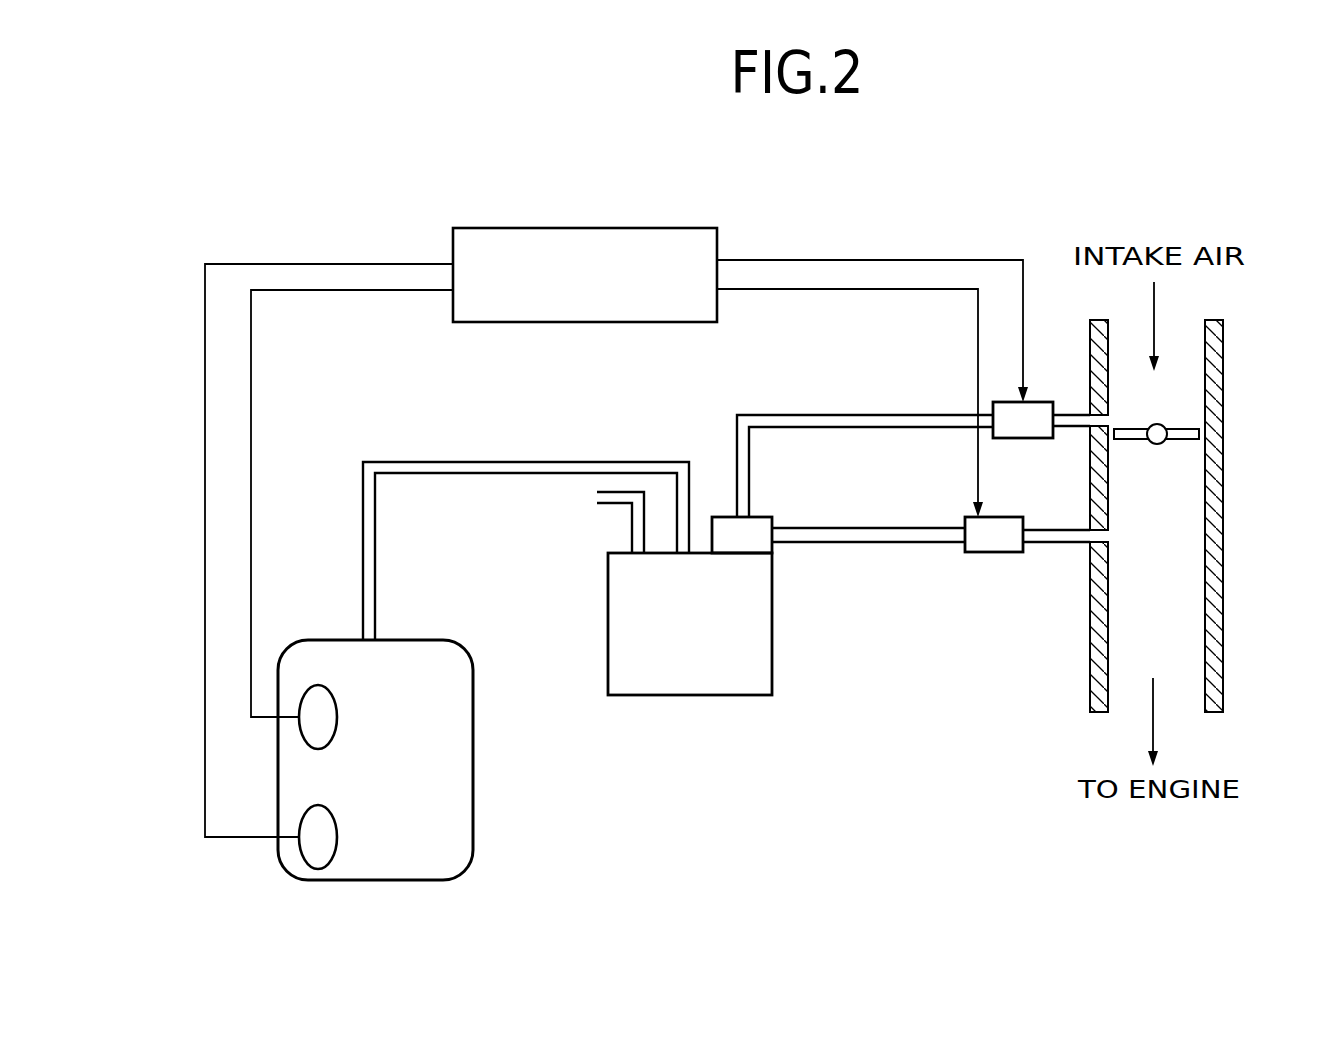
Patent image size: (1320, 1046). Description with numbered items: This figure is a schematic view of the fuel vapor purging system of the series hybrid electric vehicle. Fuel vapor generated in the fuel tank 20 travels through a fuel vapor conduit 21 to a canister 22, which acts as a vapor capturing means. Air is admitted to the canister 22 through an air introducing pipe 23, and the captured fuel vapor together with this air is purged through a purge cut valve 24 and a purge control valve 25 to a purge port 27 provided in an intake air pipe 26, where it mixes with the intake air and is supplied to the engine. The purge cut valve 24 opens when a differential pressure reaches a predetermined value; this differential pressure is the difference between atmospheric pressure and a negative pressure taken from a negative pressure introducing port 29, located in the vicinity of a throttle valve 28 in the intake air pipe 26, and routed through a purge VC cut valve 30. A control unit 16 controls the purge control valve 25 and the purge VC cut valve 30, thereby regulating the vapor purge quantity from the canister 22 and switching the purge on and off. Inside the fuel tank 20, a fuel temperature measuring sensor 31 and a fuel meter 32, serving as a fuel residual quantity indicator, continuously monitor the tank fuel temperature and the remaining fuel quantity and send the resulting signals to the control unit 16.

The control unit 16 is at (688, 228).
The fuel tank 20 is at (473, 742).
The fuel vapor conduit 21 is at (565, 462).
The canister 22 is at (726, 695).
The air introducing pipe 23 is at (597, 496).
The purge cut valve 24 is at (727, 517).
The purge control valve 25 is at (995, 553).
The intake air pipe 26 is at (1224, 396).
The purge port 27 is at (1108, 536).
The throttle valve 28 is at (1183, 428).
The negative pressure introducing port 29 is at (1104, 420).
The purge VC cut valve 30 is at (1038, 403).
The fuel temperature measuring sensor 31 is at (318, 685).
The fuel meter 32 is at (318, 870).